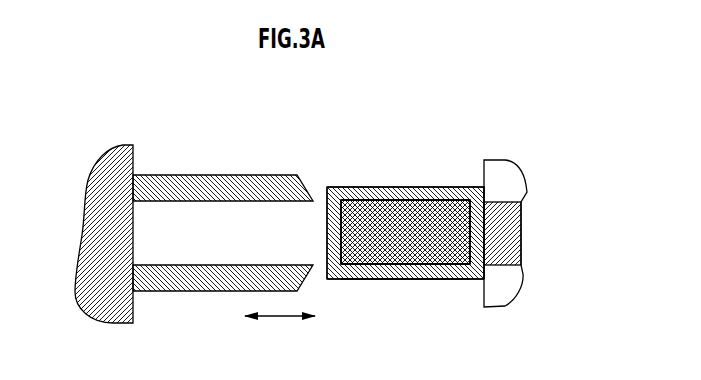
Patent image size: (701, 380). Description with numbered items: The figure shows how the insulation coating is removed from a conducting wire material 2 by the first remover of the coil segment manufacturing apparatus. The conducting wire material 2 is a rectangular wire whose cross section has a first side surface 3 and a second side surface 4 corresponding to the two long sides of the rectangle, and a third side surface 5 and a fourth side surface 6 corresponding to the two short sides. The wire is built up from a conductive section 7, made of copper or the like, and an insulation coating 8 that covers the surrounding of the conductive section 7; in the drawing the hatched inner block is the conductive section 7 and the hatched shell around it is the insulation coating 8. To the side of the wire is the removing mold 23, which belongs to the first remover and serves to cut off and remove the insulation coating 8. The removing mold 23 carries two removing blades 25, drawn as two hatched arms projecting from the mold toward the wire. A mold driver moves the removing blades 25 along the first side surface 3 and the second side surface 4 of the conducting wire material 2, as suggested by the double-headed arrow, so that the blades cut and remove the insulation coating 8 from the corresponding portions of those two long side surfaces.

The conducting wire material 2 is at (407, 168).
The first side surface 3 is at (380, 187).
The second side surface 4 is at (365, 280).
The third side surface 5 is at (327, 235).
The fourth side surface 6 is at (476, 192).
The conductive section 7 is at (423, 250).
The insulation coating 8 is at (460, 280).
The removing mold 23 is at (101, 135).
The removing blades 25 is at (199, 175).